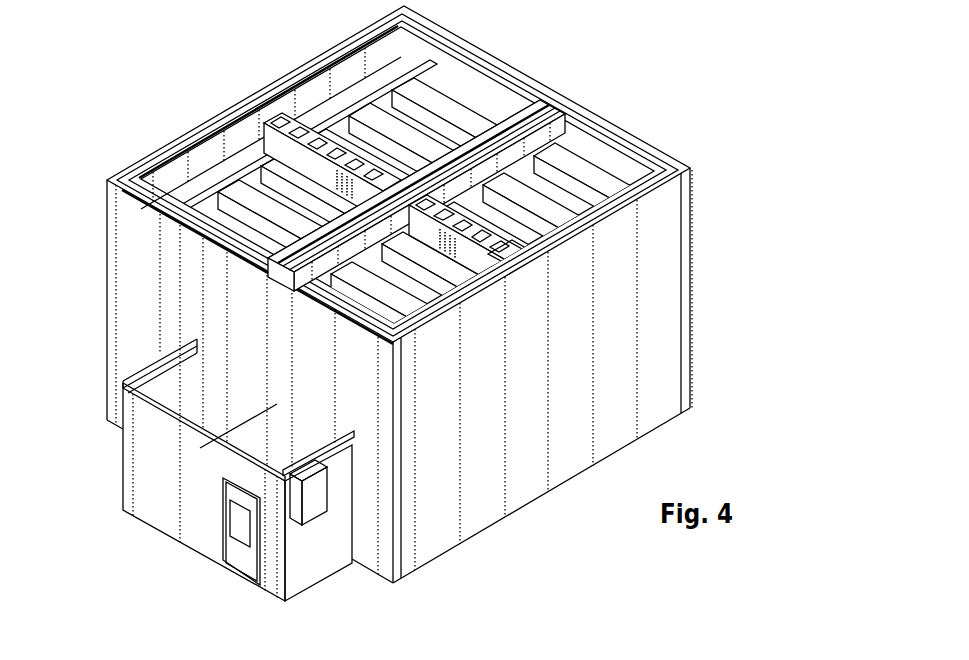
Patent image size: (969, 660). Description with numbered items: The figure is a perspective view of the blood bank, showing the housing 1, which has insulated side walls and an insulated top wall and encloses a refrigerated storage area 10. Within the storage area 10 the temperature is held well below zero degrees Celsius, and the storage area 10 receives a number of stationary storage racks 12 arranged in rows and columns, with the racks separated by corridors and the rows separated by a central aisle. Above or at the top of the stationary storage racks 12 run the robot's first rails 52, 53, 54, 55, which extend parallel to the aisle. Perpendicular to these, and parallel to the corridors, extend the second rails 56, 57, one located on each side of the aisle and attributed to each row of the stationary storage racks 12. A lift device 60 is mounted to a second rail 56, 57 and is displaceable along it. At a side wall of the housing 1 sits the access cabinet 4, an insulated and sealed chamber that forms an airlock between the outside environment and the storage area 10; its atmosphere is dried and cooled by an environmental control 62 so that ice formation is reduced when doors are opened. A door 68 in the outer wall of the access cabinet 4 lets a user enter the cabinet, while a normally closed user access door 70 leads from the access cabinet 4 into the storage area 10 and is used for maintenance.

The housing 1 is at (702, 323).
The access cabinet 4 is at (219, 470).
The storage area 10 is at (568, 157).
The stationary storage racks 12 is at (690, 137).
The first rail 52 is at (246, 240).
The first rail 53 is at (497, 127).
The first rail 54 is at (517, 133).
The first rail 55 is at (482, 265).
The second rail 56 is at (290, 128).
The second rail 57 is at (561, 381).
The lift device 60 is at (288, 203).
The environmental control 62 is at (329, 538).
The door 68 is at (217, 540).
The user access door 70 is at (293, 416).